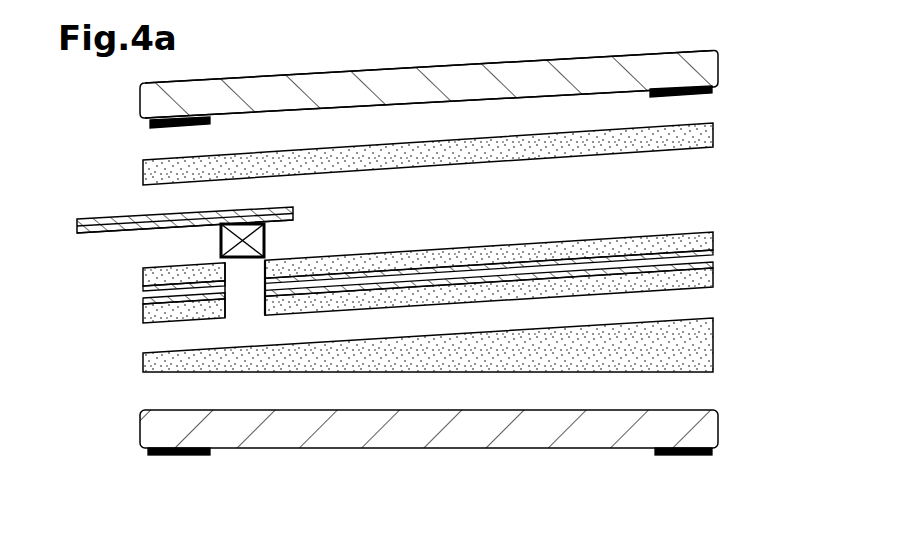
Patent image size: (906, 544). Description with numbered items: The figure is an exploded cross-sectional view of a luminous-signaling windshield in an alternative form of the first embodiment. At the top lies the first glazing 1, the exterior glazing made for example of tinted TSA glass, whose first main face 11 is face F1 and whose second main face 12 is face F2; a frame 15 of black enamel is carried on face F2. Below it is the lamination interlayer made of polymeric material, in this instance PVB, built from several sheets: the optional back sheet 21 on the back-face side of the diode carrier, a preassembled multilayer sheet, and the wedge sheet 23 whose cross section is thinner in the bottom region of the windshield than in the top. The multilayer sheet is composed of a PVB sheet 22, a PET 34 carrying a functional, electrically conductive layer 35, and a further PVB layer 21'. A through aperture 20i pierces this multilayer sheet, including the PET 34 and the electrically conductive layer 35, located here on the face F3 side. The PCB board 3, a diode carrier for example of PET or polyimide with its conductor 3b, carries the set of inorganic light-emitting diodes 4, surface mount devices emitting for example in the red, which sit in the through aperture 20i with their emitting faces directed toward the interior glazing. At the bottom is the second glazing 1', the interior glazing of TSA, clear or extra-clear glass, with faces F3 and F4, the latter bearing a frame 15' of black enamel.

The first glazing 1 is at (429, 59).
The first main face 11 is at (421, 67).
The second main face 12 is at (482, 99).
The frame 15 is at (384, 117).
The back sheet 21 is at (463, 154).
The sheet 22 is at (713, 238).
The PVB layer of multilayer sheet 21' is at (466, 295).
The wedge sheet 23 is at (713, 346).
The PCB board 3 is at (95, 220).
The conductor 3b is at (99, 234).
The PET 34 is at (143, 292).
The electrically conductive layer 35 is at (143, 302).
The through aperture 20i is at (236, 305).
The inorganic light-emitting diodes 4 is at (248, 262).
The second glazing 1' is at (429, 449).
The frame 15' is at (422, 486).